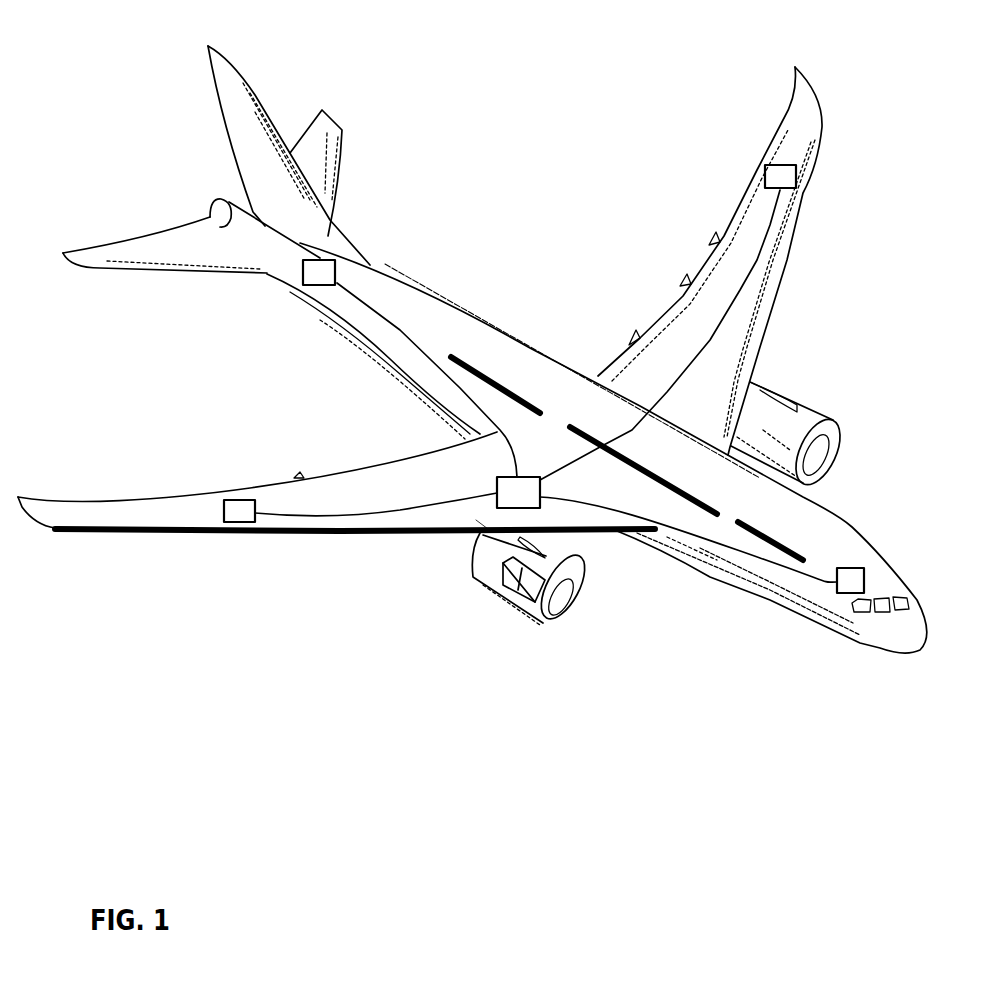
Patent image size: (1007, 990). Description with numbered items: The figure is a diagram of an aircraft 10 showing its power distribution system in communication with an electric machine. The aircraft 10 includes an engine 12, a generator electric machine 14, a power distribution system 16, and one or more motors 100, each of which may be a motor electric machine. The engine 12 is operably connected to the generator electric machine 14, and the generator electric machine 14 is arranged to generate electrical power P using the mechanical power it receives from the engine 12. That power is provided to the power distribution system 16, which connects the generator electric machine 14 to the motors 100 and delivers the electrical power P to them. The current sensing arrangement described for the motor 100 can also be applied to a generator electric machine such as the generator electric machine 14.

The aircraft 10 is at (475, 388).
The engine 12 is at (527, 582).
The generator electric machine 14 is at (503, 578).
The power distribution system 16 is at (425, 348).
The motor 100 is at (320, 270).
The electrical power P is at (483, 512).